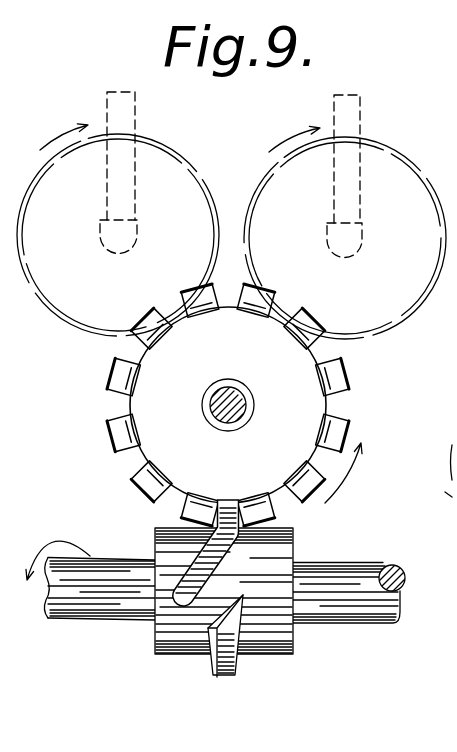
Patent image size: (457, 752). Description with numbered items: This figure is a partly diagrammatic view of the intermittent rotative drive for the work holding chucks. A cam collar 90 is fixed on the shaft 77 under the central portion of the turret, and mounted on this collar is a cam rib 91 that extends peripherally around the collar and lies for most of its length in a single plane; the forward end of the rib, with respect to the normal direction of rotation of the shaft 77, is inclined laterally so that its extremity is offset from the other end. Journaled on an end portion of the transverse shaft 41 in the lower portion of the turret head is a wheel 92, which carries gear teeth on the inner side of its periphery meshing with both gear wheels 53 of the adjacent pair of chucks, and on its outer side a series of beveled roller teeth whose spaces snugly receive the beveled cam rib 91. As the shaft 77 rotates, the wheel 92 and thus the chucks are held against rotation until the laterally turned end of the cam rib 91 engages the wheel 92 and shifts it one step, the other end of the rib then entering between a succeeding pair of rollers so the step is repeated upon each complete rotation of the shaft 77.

The transverse shaft 41 is at (228, 403).
The gear wheel 53 is at (258, 168).
The shaft 77 is at (117, 597).
The cam collar 90 is at (273, 565).
The cam rib 91 is at (223, 680).
The wheel 92 is at (288, 418).